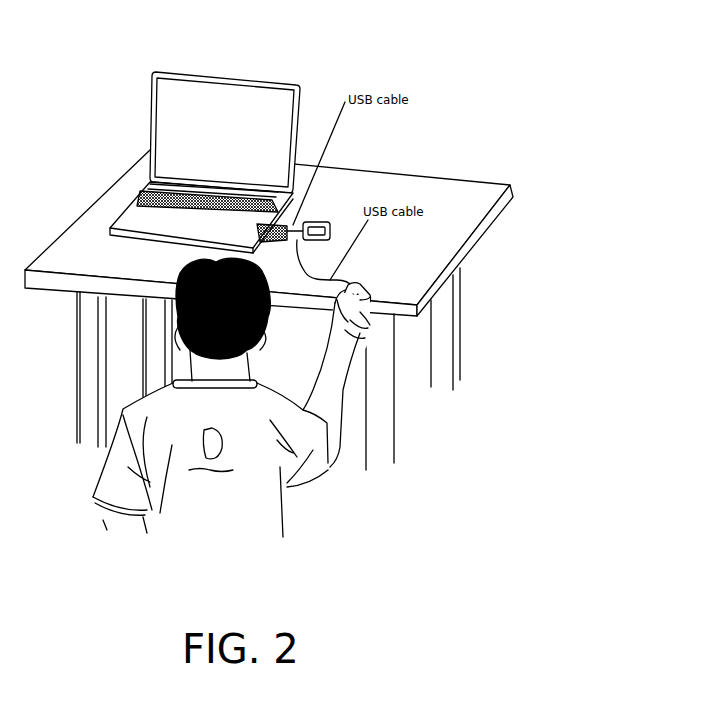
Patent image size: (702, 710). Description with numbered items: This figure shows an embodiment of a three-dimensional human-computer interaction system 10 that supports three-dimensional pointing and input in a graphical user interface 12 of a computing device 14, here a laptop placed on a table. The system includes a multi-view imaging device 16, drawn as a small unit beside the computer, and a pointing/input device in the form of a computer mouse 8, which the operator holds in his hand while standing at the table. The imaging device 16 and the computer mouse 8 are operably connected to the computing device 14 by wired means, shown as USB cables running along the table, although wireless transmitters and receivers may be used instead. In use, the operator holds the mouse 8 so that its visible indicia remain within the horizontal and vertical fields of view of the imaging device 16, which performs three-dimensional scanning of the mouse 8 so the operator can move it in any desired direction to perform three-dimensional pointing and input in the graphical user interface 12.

The 3D human-computer interaction system 10 is at (535, 94).
The graphical user interface 12 is at (226, 124).
The computing device 14 is at (234, 135).
The multi-view imaging device 16 is at (318, 221).
The computer mouse 8 is at (362, 293).